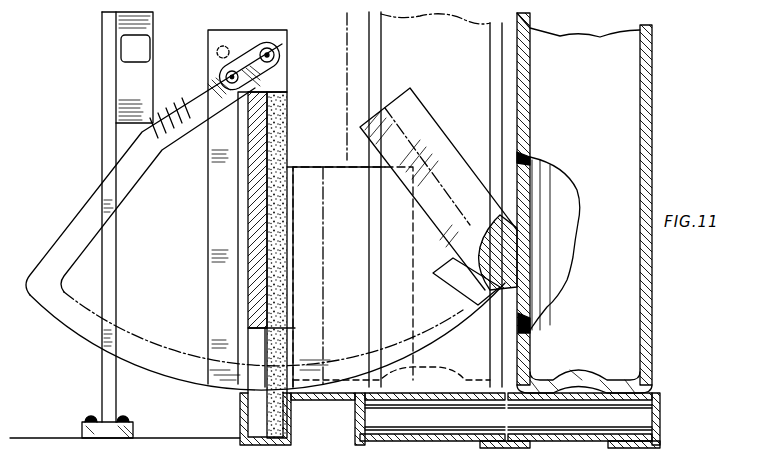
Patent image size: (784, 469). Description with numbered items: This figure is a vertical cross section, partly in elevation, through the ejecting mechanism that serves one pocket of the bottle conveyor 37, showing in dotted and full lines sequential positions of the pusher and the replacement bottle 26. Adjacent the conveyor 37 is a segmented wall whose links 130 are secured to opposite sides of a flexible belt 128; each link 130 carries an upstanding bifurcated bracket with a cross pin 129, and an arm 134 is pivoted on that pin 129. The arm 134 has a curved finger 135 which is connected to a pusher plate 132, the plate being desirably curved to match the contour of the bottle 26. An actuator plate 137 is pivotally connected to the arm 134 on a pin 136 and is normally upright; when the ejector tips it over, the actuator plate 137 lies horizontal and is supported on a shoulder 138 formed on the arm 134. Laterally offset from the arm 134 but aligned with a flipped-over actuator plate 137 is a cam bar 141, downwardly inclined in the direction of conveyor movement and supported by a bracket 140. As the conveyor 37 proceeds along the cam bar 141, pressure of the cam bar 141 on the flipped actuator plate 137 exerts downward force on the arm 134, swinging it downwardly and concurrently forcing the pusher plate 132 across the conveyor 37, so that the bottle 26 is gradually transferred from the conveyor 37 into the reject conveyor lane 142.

The bottle 26 is at (653, 110).
The conveyor 37 is at (443, 400).
The flexible belt 128 is at (286, 117).
The cross pin 129 is at (269, 53).
The link 130 is at (296, 165).
The pusher plate 132 is at (470, 107).
The arm 134 is at (215, 245).
The curved finger 135 is at (436, 332).
The pin 136 is at (240, 44).
The actuator plate 137 is at (200, 112).
The shoulder 138 is at (240, 90).
The bracket 140 is at (116, 312).
The cam bar 141 is at (153, 22).
The reject conveyor lane 142 is at (640, 400).